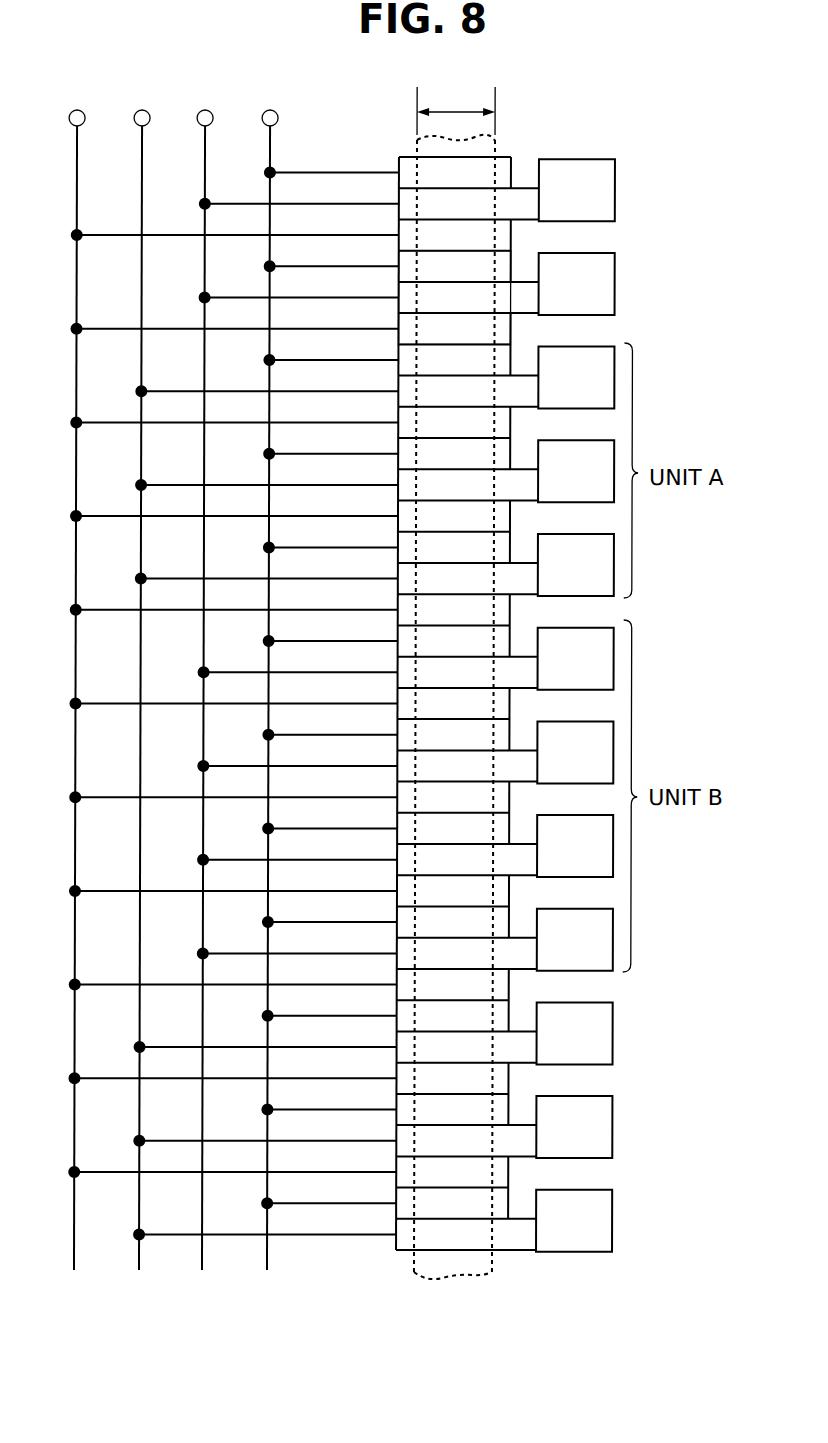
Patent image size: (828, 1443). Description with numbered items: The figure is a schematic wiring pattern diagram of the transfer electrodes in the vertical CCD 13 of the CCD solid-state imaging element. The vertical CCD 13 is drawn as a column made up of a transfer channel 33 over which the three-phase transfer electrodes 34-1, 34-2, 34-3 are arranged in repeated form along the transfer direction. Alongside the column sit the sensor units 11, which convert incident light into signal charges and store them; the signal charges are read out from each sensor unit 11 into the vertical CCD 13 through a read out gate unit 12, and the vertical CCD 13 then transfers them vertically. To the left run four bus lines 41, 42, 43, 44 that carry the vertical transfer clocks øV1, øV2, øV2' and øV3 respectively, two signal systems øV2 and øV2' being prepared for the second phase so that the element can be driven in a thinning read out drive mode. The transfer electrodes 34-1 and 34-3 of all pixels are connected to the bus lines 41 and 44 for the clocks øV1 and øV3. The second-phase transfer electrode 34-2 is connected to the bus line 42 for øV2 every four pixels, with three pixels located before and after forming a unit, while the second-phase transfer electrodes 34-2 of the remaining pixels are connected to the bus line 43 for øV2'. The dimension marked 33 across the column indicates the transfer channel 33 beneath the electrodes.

The sensor unit 11 is at (590, 1235).
The read out gate unit 12 is at (514, 703).
The vertical CCD 13 is at (514, 670).
The transfer channel 33 is at (454, 681).
The transfer electrode for the first phase 34-1 is at (410, 332).
The transfer electrode for the second phase 34-2 is at (410, 300).
The transfer electrode for the third phase 34-3 is at (410, 268).
The bus line 41 is at (78, 150).
The bus line 42 is at (143, 150).
The bus line 43 is at (206, 152).
The bus line 44 is at (271, 152).